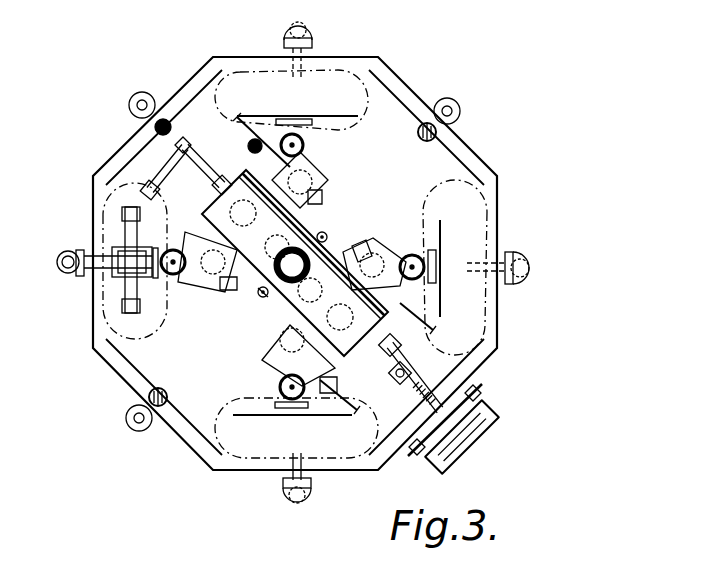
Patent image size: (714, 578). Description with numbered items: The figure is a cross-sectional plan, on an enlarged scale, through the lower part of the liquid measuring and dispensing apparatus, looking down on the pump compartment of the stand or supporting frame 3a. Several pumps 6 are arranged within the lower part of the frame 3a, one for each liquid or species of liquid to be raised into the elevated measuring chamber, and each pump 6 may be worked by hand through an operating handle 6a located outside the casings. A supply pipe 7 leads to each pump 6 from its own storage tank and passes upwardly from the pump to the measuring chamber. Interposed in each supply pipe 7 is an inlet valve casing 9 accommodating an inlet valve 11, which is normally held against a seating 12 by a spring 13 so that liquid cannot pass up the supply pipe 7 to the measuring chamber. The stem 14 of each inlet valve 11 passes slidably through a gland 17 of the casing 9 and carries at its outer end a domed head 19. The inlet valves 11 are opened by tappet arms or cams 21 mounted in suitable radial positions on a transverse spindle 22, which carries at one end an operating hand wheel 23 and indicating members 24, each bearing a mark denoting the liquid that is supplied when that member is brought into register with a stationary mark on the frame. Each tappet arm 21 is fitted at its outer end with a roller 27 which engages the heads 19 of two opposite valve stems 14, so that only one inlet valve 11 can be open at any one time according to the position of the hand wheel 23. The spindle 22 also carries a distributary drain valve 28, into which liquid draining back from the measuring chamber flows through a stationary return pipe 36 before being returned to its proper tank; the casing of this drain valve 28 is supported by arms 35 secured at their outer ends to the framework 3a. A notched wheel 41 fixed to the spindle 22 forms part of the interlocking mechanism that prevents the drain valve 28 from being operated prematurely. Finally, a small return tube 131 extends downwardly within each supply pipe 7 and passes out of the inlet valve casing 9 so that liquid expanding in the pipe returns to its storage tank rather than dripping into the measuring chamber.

The stand or supporting frame 3a is at (130, 106).
The pump 6 is at (353, 72).
The operating handle 6a is at (314, 32).
The supply pipe 7 is at (173, 278).
The inlet valve casing 9 is at (196, 275).
The inlet valve 11 is at (308, 170).
The seating 12 is at (306, 143).
The spring 13 is at (320, 197).
The inlet valve stem 14 is at (240, 116).
The gland 17 is at (246, 147).
The domed head 19 is at (228, 108).
The tappet arm or cam 21 is at (182, 170).
The transverse spindle 22 is at (207, 176).
The operating hand wheel 23 is at (470, 436).
The indicating member 24 is at (466, 398).
The roller 27 is at (138, 196).
The distributary drain valve 28 is at (259, 229).
The arm 35 is at (407, 124).
The return pipe 36 is at (325, 304).
The notched wheel 41 is at (398, 346).
The return tube 131 is at (300, 116).